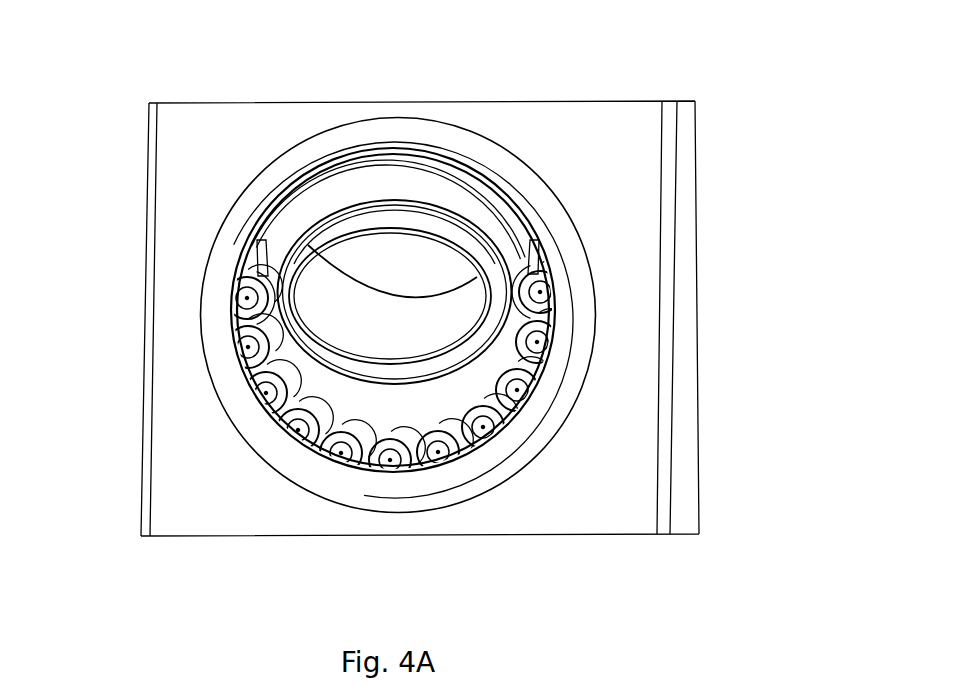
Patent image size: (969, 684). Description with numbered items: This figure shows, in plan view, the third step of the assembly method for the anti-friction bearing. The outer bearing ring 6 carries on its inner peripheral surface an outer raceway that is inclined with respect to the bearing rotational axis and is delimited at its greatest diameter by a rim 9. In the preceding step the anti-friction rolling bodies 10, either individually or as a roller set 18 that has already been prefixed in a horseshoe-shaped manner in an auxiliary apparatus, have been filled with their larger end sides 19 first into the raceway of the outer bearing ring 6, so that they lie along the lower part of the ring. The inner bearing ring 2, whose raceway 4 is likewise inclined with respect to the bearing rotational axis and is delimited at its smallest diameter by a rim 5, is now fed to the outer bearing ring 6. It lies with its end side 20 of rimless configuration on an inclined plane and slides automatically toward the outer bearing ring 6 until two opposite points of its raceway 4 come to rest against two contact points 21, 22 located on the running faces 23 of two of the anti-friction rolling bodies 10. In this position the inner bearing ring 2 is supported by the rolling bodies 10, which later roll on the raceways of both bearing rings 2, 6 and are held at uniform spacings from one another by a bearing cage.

The inner bearing ring 2 is at (404, 198).
The raceway 4 is at (345, 190).
The rim 5 is at (300, 180).
The outer bearing ring 6 is at (498, 136).
The rim 9 is at (250, 232).
The anti-friction rolling bodies 10 is at (343, 457).
The roller set 18 is at (395, 477).
The larger end sides 19 is at (466, 448).
The end side of rimless configuration 20 is at (483, 284).
The contact point 21 is at (244, 298).
The contact point 22 is at (522, 287).
The running faces 23 is at (237, 338).